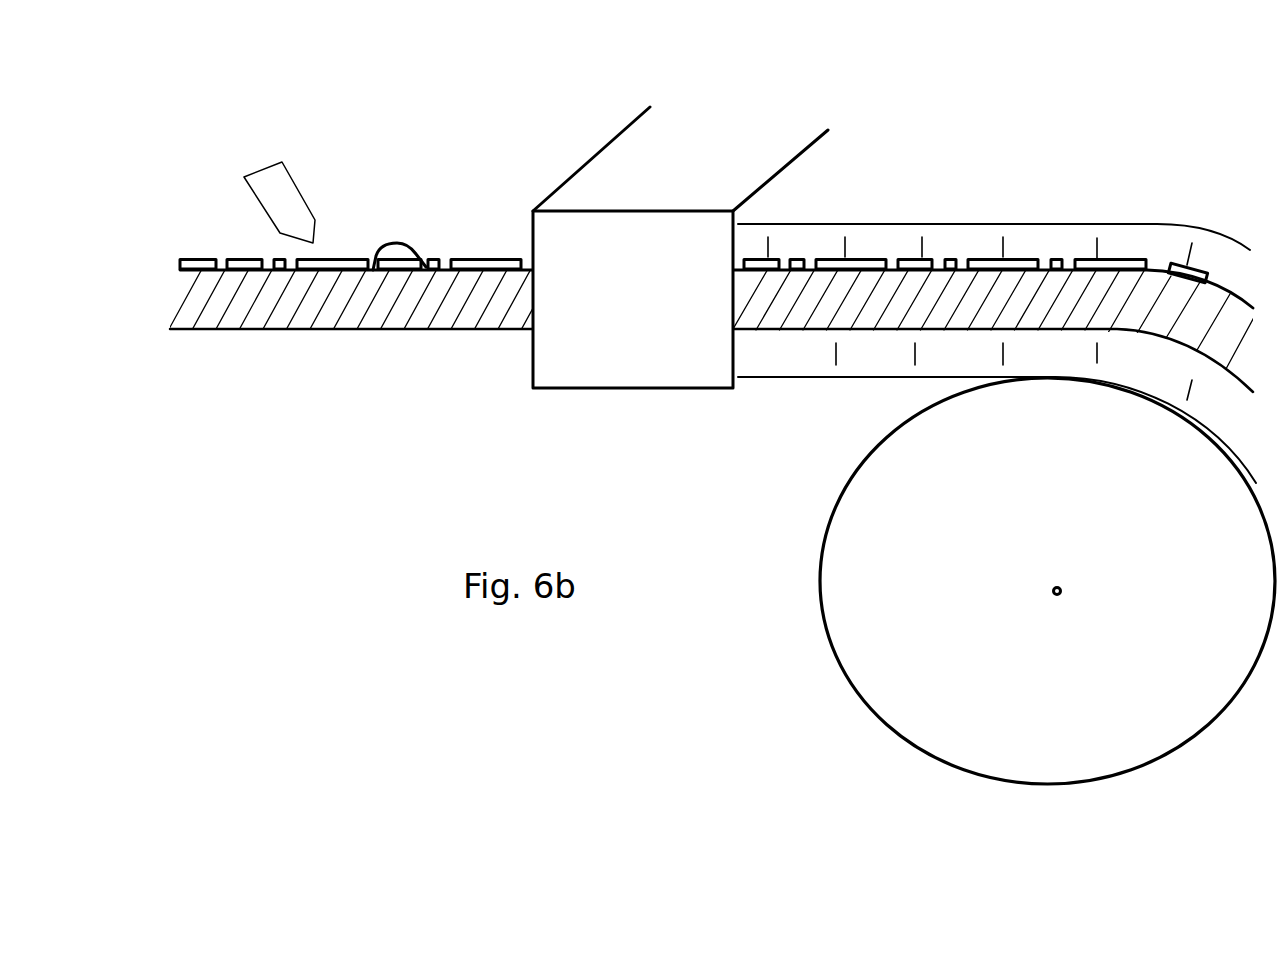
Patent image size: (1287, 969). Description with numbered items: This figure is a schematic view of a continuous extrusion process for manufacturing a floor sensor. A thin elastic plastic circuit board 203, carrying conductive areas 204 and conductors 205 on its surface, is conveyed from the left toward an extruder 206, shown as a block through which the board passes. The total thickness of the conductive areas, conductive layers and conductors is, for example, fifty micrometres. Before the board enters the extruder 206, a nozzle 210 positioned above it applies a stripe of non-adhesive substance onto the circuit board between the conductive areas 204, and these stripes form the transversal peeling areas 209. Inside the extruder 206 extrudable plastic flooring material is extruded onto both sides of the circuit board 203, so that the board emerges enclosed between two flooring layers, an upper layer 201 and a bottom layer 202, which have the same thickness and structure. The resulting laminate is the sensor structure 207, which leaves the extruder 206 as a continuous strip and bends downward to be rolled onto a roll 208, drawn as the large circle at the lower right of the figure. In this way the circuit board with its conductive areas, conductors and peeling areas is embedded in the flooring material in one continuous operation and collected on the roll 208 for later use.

The upper layer 201 is at (888, 237).
The bottom layer 202 is at (893, 352).
The circuit board 203 is at (222, 298).
The conductive areas 204 is at (500, 250).
The conductors 205 is at (428, 248).
The extruder 206 is at (592, 265).
The sensor structure 207 is at (798, 233).
The roll 208 is at (1047, 581).
The transversal peeling areas 209 is at (385, 238).
The nozzle 210 is at (273, 183).